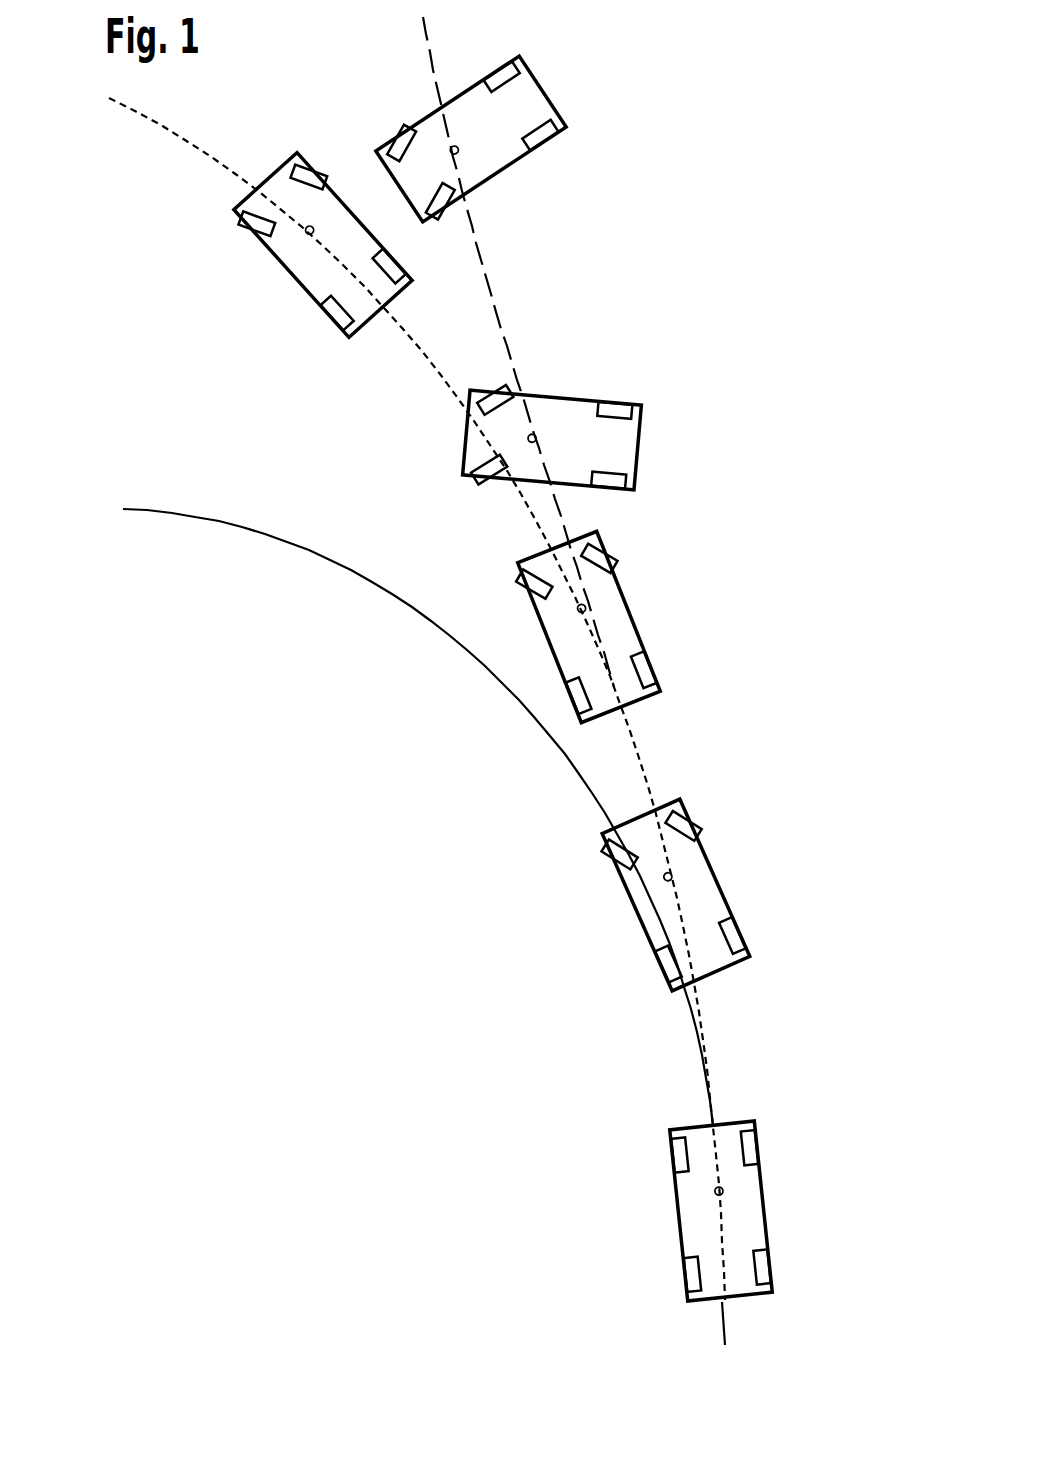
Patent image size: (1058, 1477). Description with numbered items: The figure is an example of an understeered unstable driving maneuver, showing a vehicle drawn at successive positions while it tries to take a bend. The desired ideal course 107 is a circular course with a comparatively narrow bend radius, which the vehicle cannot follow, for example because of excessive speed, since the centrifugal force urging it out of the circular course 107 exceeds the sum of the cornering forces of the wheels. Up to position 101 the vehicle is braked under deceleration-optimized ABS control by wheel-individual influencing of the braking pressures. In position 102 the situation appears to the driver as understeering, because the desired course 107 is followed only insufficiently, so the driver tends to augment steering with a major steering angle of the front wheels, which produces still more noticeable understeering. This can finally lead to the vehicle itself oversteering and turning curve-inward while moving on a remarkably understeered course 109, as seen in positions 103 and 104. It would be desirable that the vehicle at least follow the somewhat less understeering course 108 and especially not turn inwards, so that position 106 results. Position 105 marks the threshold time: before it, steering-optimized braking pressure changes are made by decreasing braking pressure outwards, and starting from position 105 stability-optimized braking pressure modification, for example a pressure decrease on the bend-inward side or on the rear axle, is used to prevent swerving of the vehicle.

The position 101 is at (683, 1188).
The position 102 is at (652, 925).
The position 103 is at (628, 445).
The position 104 is at (537, 103).
The position 105 is at (632, 647).
The position 106 is at (295, 268).
The desired ideal course 107 is at (155, 512).
The less understeering course 108 is at (140, 112).
The understeered course 109 is at (432, 63).